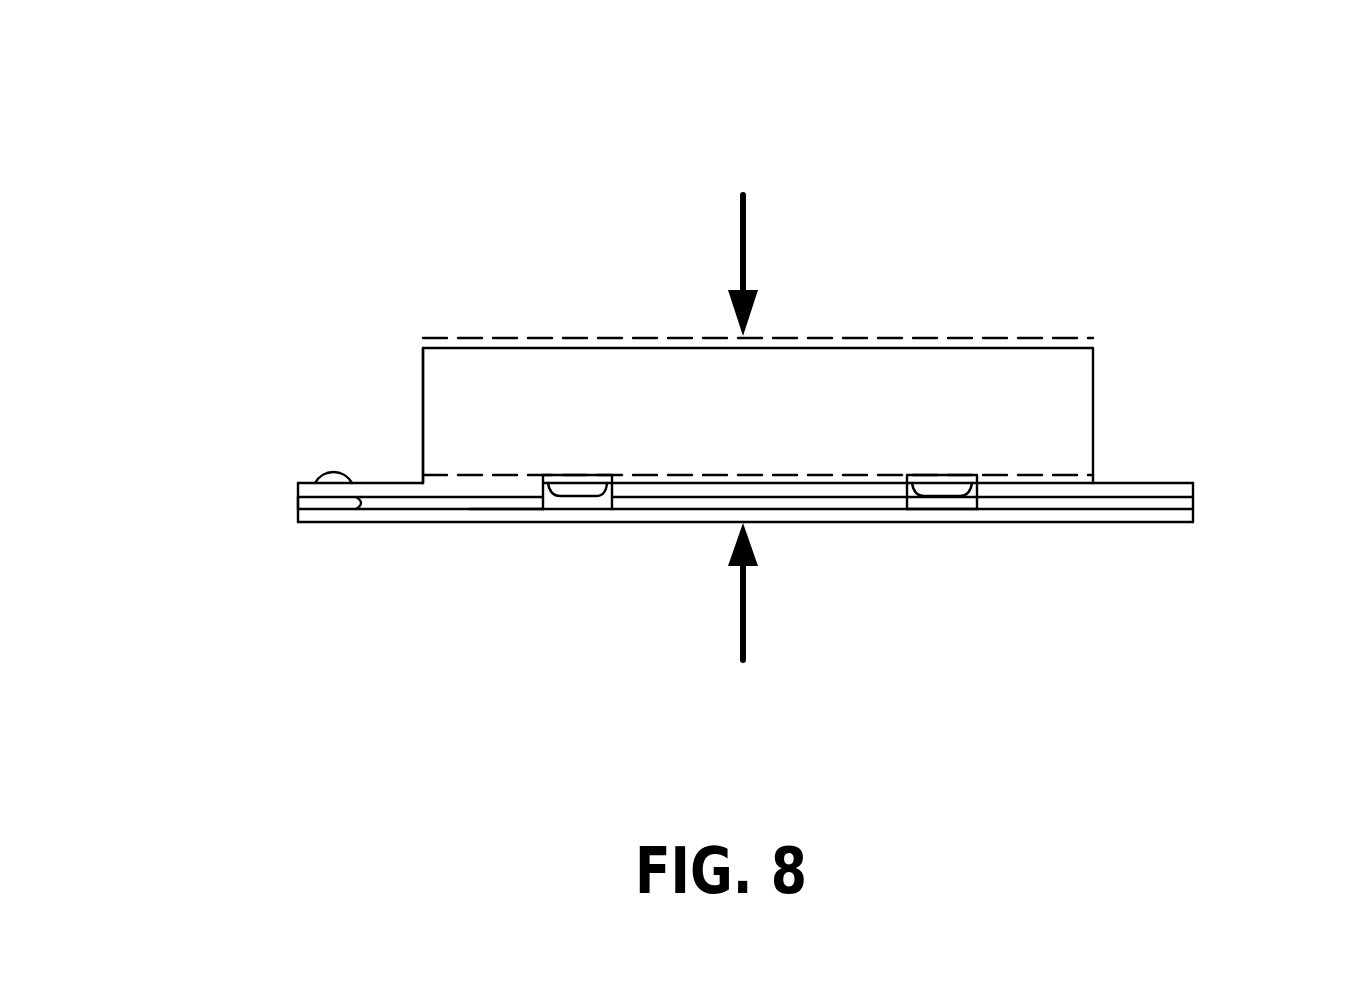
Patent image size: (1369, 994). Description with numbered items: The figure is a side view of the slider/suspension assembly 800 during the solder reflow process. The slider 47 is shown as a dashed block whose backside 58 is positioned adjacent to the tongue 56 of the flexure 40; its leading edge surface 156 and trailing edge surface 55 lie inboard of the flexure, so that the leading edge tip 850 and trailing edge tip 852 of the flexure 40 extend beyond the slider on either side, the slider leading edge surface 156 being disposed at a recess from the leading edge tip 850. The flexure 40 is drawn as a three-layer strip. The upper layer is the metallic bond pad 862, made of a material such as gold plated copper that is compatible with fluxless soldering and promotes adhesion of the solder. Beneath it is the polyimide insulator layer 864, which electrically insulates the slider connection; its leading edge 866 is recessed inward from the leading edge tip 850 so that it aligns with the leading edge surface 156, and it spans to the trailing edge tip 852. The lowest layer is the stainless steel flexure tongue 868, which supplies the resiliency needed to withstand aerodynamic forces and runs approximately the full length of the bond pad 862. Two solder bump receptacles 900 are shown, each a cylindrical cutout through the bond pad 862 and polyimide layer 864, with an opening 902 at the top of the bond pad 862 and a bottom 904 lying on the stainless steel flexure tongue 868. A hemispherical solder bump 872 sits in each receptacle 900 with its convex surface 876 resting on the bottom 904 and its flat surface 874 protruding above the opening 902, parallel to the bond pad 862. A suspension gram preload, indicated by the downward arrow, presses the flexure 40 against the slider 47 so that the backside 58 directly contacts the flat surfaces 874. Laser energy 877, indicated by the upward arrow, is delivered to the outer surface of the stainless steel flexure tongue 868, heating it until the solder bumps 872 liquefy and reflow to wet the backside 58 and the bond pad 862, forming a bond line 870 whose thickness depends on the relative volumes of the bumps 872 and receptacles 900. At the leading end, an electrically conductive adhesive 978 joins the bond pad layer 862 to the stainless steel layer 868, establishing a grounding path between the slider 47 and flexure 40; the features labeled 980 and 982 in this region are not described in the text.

The slider/suspension assembly 800 is at (776, 40).
The trailing edge surface 55 is at (811, 415).
The slider 47 is at (759, 433).
The leading edge surface 156 is at (486, 415).
The metallic bond pad 862 is at (281, 466).
The backside 58 is at (768, 455).
The bond line 870 is at (1098, 454).
The electrically conductive adhesive 978 is at (271, 461).
The leading edge 866 is at (423, 505).
The polyimide insulator layer 864 is at (902, 541).
The lower layer 980 is at (332, 512).
The solder bump receptacle 900 is at (533, 500).
The stainless steel flexure tongue 868 is at (909, 552).
The flexure 40 is at (745, 557).
The leading edge tip 850 is at (293, 513).
The trailing edge tip 852 is at (1193, 502).
The dimple bump 982 is at (335, 470).
The tongue 56 is at (565, 468).
The opening 902 is at (640, 435).
The bottom 904 is at (622, 558).
The flat surface 874 is at (976, 470).
The solder bump 872 is at (973, 439).
The convex surface 876 is at (963, 507).
The laser energy 877 is at (743, 619).